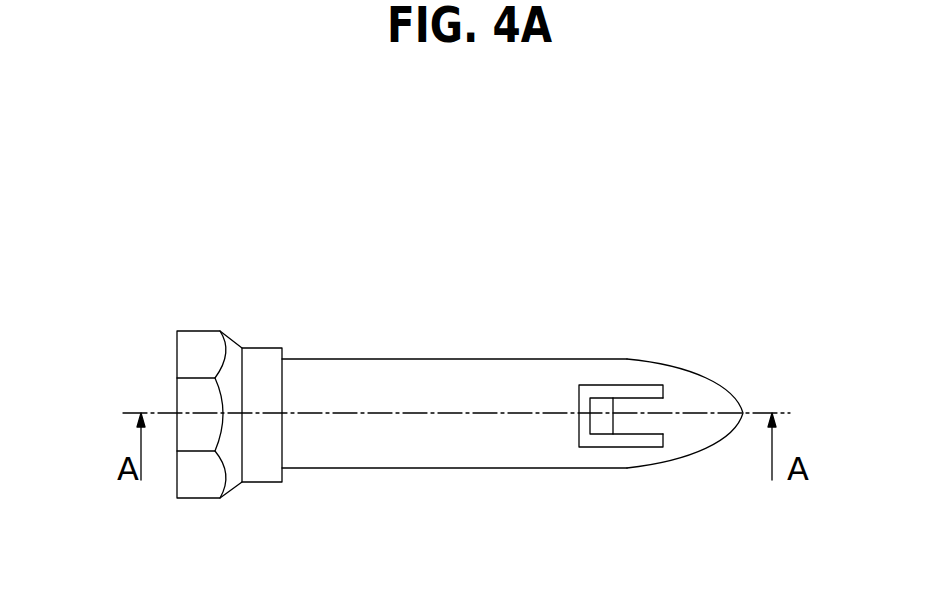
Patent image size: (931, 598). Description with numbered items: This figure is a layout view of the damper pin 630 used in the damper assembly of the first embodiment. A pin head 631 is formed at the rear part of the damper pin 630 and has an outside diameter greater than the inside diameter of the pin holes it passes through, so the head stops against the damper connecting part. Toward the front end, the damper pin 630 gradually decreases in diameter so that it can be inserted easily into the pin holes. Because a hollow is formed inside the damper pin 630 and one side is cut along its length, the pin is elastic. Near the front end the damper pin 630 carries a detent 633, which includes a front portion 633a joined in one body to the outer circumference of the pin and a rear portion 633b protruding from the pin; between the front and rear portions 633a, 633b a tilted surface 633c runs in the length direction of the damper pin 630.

The damper pin 630 is at (542, 343).
The pin head 631 is at (198, 330).
The detent 633 is at (642, 403).
The front portion 633a is at (665, 408).
The rear portion 633b is at (601, 423).
The tilted surface 633c is at (633, 420).